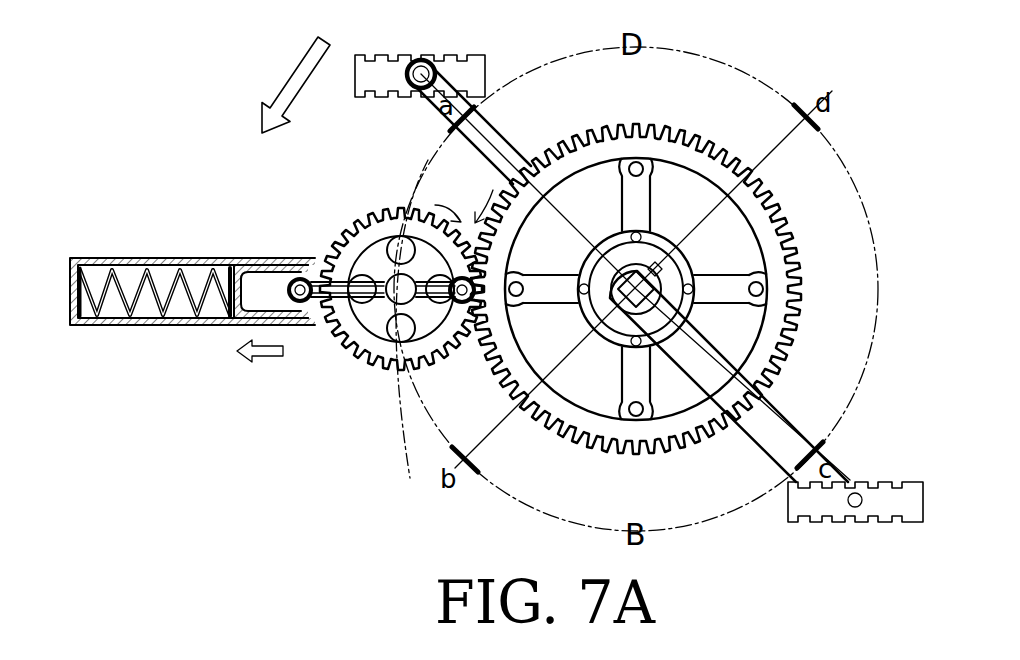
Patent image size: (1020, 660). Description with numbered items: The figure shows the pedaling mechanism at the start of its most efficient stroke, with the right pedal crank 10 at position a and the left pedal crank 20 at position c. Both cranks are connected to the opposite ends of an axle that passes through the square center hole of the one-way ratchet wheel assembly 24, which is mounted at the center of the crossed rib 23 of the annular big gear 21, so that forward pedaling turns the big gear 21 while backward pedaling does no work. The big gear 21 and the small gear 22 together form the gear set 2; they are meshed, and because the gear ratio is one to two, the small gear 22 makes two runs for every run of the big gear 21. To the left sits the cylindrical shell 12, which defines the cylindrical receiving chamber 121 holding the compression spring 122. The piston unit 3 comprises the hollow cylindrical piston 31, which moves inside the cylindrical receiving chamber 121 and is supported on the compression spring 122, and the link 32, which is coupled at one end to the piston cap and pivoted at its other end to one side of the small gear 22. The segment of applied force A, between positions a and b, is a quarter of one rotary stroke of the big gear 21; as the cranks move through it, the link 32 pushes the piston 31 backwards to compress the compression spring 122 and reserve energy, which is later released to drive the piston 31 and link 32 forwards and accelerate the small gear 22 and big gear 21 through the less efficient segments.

The gear set 2 is at (488, 355).
The piston unit 3 is at (258, 303).
The right pedal crank 10 is at (447, 93).
The cylindrical shell 12 is at (95, 268).
The left pedal crank 20 is at (800, 440).
The big gear 21 is at (713, 172).
The small gear 22 is at (386, 370).
The crossed rib 23 is at (725, 283).
The one-way ratchet wheel assembly 24 is at (623, 323).
The hollow cylindrical piston 31 is at (275, 262).
The link 32 is at (333, 306).
The cylindrical receiving chamber 121 is at (163, 280).
The compression spring 122 is at (228, 262).